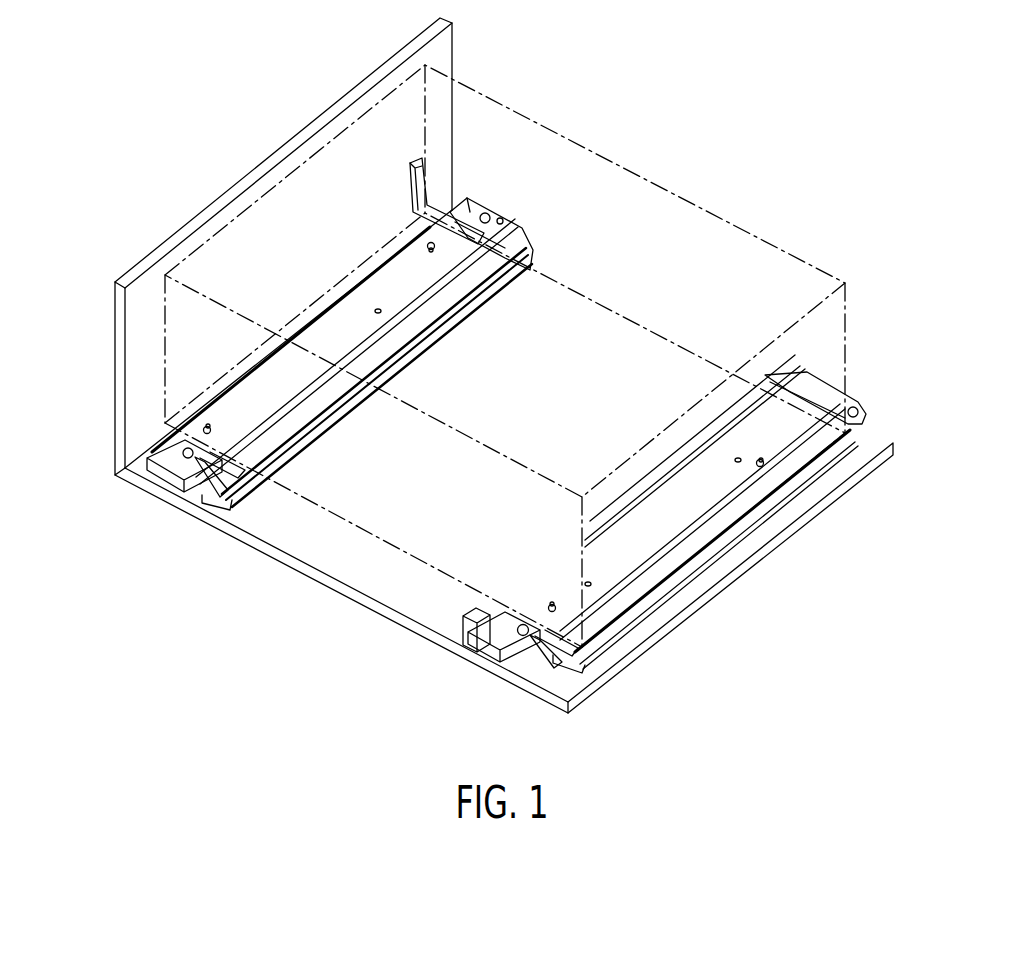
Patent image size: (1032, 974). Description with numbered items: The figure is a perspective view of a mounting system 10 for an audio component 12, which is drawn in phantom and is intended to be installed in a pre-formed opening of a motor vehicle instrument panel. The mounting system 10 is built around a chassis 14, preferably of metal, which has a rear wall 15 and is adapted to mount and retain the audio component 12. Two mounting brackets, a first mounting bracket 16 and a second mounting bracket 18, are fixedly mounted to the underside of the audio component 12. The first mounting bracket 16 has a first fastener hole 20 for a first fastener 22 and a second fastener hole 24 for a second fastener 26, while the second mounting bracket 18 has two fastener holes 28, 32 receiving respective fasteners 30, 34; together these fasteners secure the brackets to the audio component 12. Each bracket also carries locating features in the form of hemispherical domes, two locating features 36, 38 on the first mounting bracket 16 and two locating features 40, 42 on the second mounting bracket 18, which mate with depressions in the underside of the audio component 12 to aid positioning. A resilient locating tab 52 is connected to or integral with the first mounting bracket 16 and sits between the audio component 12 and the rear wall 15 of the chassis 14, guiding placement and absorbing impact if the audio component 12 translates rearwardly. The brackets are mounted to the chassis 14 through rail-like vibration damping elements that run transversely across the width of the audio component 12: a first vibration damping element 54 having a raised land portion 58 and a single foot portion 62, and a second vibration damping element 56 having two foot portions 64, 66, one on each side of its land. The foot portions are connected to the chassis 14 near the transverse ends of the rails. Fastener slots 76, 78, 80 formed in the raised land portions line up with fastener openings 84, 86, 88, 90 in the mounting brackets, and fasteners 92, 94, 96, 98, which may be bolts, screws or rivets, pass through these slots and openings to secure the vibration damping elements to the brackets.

The mounting system 10 is at (742, 150).
The audio component 12 is at (619, 182).
The chassis 14 is at (102, 319).
The rear wall 15 is at (112, 290).
The first mounting bracket 16 is at (355, 257).
The second mounting bracket 18 is at (622, 444).
The first fastener hole 20 is at (205, 426).
The first fastener 22 is at (209, 424).
The second fastener hole 24 is at (428, 251).
The second fastener 26 is at (426, 233).
The fastener hole 28 is at (549, 603).
The fastener 30 is at (553, 602).
The fastener hole 32 is at (764, 466).
The fastener 34 is at (766, 462).
The locating feature 36 is at (248, 478).
The locating feature 38 is at (374, 314).
The locating feature 40 is at (592, 588).
The locating feature 42 is at (735, 463).
The locating tab 52 is at (414, 158).
The first vibration damping element 54 is at (100, 468).
The second vibration damping element 56 is at (470, 682).
The raised land portion 58 is at (160, 483).
The foot portion 62 is at (342, 413).
The foot portion 64 is at (463, 614).
The foot portion 66 is at (690, 590).
The fastener slot 76 is at (213, 492).
The fastener slot 78 is at (520, 238).
The fastener slot 80 is at (537, 648).
The fastener opening 84 is at (200, 498).
The fastener opening 86 is at (500, 216).
The fastener opening 88 is at (528, 642).
The fastener opening 90 is at (866, 422).
The fastener 92 is at (183, 451).
The fastener 94 is at (484, 211).
The fastener 96 is at (521, 624).
The fastener 98 is at (855, 406).